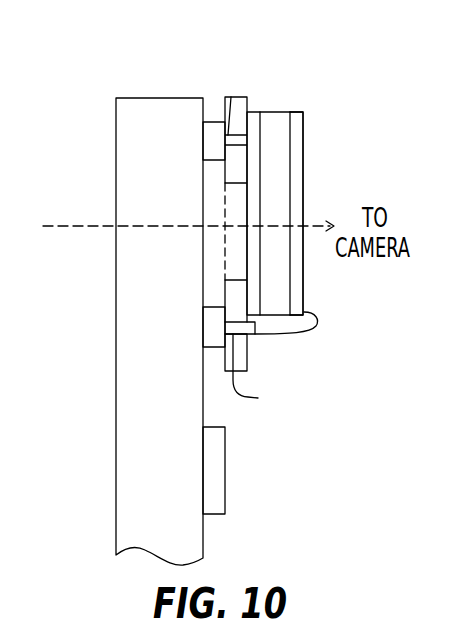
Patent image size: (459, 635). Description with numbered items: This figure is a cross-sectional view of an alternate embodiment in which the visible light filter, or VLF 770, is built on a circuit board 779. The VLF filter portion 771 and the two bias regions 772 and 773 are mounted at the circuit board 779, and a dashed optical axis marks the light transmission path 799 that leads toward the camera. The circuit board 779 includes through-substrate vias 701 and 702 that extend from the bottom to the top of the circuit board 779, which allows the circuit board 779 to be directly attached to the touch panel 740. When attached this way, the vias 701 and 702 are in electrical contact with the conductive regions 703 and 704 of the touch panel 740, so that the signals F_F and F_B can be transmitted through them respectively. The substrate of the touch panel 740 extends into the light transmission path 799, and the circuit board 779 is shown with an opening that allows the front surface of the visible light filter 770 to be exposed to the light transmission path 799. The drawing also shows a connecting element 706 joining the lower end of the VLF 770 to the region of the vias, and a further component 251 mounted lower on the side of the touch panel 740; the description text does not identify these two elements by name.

The touch panel 740 is at (131, 98).
The conductive region 703 is at (215, 122).
The through-substrate via 702 is at (235, 97).
The circuit board 779 is at (245, 97).
The flexible connector 706 is at (312, 310).
The through-substrate via 701 is at (265, 372).
The conductive region 704 is at (215, 347).
The visible light filter (VLF) 770 is at (325, 165).
The bias region 773 is at (253, 112).
The VLF filter portion 771 is at (275, 112).
The bias region 772 is at (297, 112).
The circuit board 251 is at (247, 474).
The light transmission path 799 is at (82, 226).